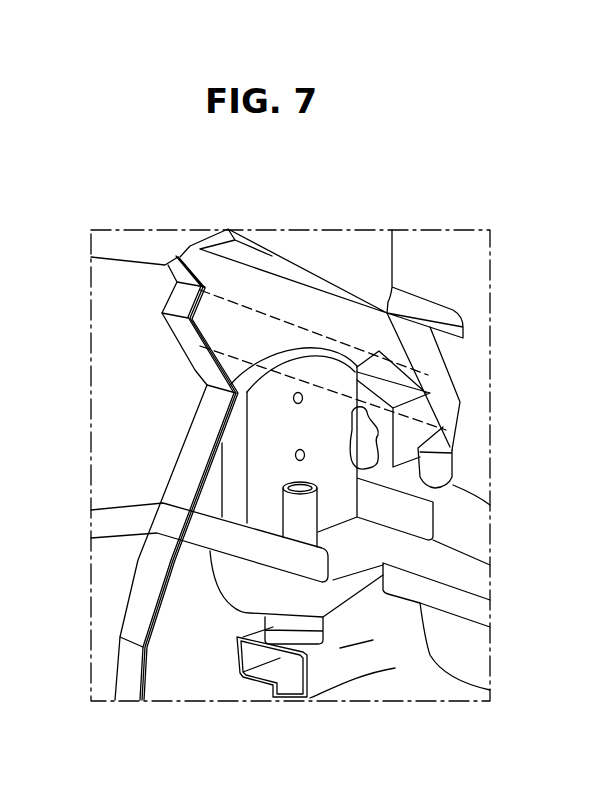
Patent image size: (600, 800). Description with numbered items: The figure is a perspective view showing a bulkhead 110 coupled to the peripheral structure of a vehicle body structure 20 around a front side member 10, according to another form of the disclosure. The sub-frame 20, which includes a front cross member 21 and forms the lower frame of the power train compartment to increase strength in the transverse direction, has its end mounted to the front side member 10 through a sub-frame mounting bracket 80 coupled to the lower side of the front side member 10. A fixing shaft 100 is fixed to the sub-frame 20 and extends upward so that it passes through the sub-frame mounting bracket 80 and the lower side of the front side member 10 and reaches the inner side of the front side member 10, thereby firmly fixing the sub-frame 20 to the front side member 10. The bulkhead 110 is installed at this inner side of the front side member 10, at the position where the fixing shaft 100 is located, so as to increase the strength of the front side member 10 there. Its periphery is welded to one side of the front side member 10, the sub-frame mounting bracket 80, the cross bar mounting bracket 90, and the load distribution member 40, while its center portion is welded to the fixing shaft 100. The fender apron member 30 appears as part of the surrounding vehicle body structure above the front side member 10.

The front side member 10 is at (233, 323).
The sub-frame 20 is at (405, 712).
The front cross member 21 is at (380, 665).
The fender apron member 30 is at (127, 245).
The load distribution member 40 is at (102, 432).
The sub-frame mounting bracket 80 is at (240, 590).
The cross bar mounting bracket 90 is at (398, 393).
The fixing shaft 100 is at (292, 517).
The bulkhead 110 is at (283, 385).